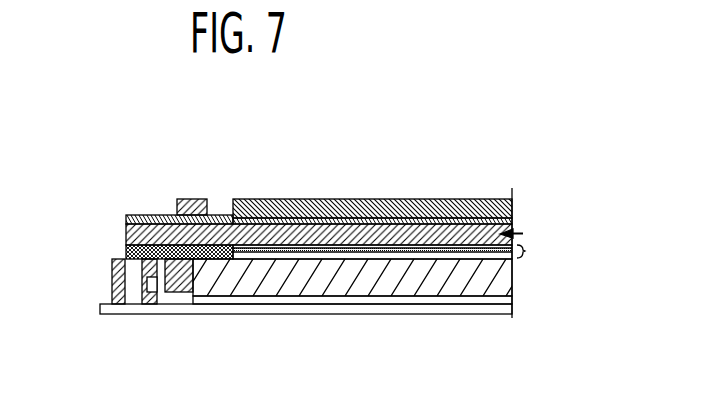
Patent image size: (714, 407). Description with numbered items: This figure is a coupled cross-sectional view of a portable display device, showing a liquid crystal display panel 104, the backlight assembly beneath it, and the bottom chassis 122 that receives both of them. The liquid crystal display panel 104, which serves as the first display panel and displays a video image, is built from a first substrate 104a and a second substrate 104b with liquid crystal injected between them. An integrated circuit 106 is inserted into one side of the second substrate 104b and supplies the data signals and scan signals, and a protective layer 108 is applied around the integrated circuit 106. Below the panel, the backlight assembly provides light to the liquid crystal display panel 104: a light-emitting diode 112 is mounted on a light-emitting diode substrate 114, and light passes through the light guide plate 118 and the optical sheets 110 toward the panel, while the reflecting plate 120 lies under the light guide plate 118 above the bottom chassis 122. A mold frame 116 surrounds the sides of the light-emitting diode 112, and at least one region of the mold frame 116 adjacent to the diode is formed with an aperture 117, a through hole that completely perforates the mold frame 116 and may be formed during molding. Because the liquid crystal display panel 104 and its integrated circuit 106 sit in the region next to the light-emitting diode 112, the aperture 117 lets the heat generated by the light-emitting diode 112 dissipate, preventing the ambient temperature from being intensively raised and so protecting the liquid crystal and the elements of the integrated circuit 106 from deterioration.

The liquid crystal display panel 104 is at (410, 128).
The first substrate 104a is at (278, 199).
The second substrate 104b is at (358, 222).
The integrated circuit 106 is at (192, 199).
The protective layer 108 is at (126, 217).
The optical sheets 110 is at (525, 251).
The light-emitting diode 112 is at (173, 286).
The light-emitting diode substrate 114 is at (126, 248).
The mold frame 116 is at (141, 304).
The aperture 117 is at (143, 290).
The light guide plate 118 is at (505, 283).
The reflecting plate 120 is at (392, 298).
The bottom chassis 122 is at (460, 312).